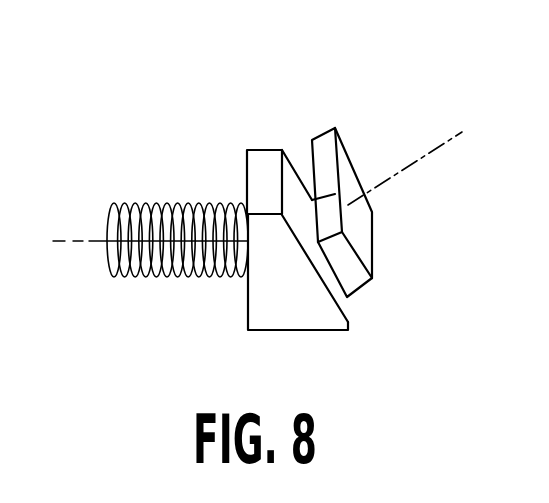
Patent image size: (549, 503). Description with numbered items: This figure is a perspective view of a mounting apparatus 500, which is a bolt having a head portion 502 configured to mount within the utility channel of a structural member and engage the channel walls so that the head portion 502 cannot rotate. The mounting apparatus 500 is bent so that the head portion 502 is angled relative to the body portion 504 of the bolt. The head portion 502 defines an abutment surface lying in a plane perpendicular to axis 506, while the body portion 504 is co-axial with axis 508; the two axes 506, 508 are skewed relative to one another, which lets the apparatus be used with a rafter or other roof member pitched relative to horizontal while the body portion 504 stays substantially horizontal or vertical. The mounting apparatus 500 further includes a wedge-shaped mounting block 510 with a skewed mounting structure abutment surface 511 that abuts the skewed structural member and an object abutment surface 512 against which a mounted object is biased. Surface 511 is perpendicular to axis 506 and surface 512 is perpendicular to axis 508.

The mounting apparatus 500 is at (168, 75).
The head portion 502 is at (316, 136).
The body portion 504 is at (147, 202).
The axis 506 is at (462, 132).
The axis 508 is at (57, 240).
The mounting block 510 is at (260, 150).
The mounting structure abutment surface 511 is at (340, 303).
The object abutment surface 512 is at (247, 316).